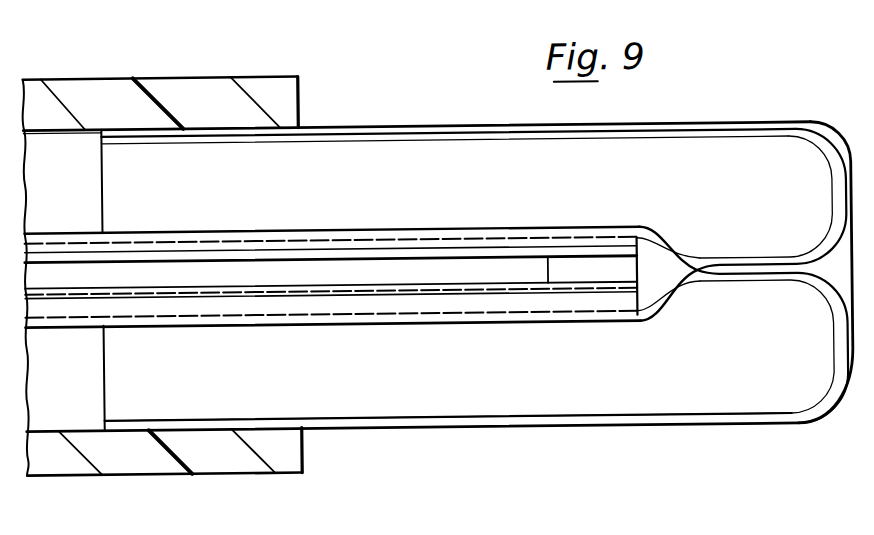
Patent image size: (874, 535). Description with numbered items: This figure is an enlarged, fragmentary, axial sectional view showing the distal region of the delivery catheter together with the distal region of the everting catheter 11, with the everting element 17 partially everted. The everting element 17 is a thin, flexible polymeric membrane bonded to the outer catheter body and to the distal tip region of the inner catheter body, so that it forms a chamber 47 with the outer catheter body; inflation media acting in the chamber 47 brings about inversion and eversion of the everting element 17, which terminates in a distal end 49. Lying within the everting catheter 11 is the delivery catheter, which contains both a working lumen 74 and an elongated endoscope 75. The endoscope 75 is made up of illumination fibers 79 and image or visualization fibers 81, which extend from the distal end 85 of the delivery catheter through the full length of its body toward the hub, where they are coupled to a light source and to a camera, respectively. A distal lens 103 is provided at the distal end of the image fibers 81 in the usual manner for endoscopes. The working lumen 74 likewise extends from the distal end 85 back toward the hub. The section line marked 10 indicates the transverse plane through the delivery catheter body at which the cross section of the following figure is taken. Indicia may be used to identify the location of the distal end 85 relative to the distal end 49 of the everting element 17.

The everting catheter 11 is at (193, 66).
The everting element 17 is at (443, 125).
The distal end 49 is at (852, 166).
The chamber 47 is at (457, 409).
The illumination fibers 79 is at (245, 247).
The image fibers 81 is at (438, 262).
The endoscope 75 is at (356, 266).
The working lumen 74 is at (400, 305).
The distal lens 103 is at (607, 286).
The distal end 85 is at (648, 256).
The section line 10- 10 is at (492, 251).